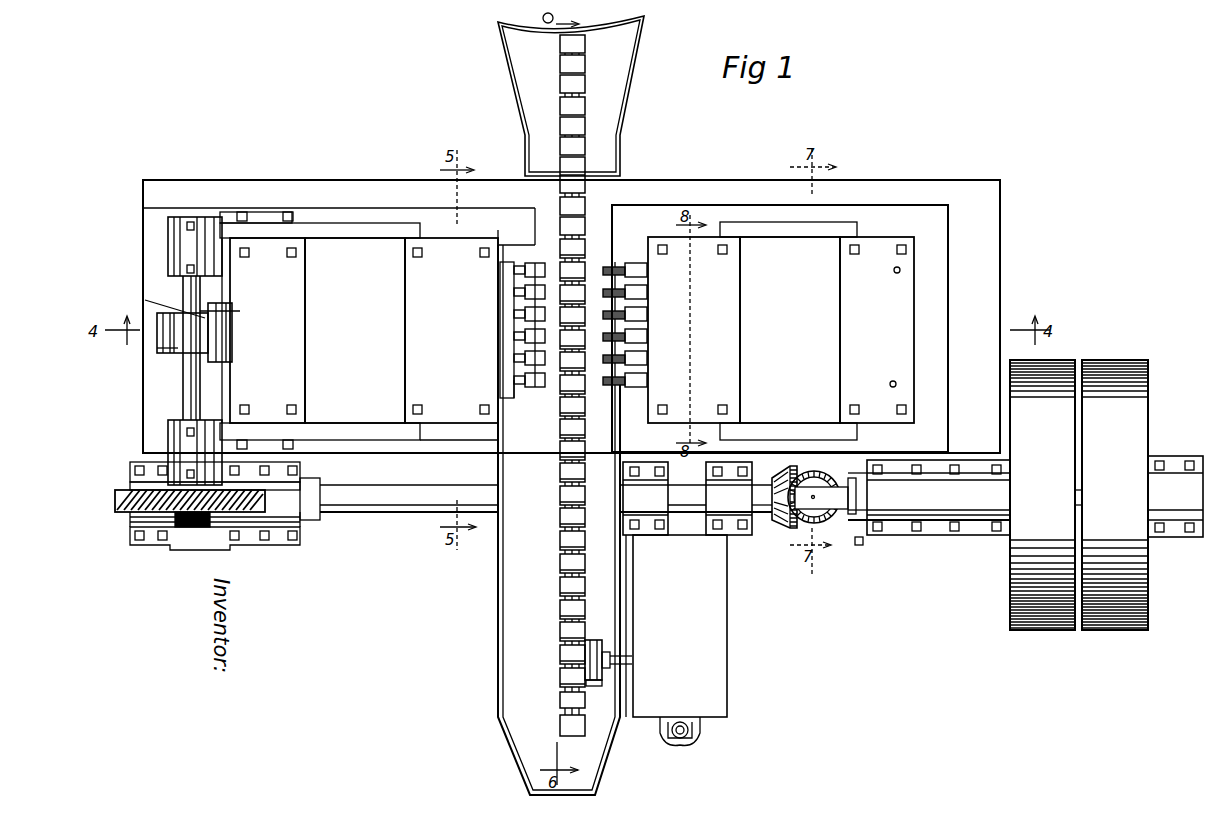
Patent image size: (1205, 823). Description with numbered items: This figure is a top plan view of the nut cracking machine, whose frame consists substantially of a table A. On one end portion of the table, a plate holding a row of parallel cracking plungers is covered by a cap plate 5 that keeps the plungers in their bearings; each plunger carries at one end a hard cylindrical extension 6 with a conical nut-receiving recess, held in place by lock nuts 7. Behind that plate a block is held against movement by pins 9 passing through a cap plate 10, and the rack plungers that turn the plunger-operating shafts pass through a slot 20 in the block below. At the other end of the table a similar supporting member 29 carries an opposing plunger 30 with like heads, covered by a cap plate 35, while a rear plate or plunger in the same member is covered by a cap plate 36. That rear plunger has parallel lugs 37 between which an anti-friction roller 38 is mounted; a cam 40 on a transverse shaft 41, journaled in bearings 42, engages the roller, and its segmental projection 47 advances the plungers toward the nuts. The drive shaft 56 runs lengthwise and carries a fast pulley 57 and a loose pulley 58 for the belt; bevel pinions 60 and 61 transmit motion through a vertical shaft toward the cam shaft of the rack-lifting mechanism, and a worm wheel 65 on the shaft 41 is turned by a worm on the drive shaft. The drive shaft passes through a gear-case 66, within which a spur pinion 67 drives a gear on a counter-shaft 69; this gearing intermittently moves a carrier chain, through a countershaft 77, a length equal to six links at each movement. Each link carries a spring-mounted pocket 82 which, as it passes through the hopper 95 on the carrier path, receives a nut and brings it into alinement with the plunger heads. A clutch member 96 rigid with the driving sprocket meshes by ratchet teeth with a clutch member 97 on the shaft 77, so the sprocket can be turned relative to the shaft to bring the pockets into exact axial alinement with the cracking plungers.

The table A is at (692, 181).
The hopper 95 is at (636, 106).
The pocket 82 is at (562, 521).
The cap plate 36 is at (320, 330).
The cap plate 35 is at (451, 339).
The plunger 30 is at (496, 314).
The supporting member 29 is at (433, 447).
The bearing 42 is at (193, 226).
The shaft 41 is at (190, 398).
The anti-friction roller 38 is at (232, 332).
The lug 37 is at (226, 306).
The cam 40 is at (165, 352).
The segmental projection 47 is at (205, 318).
The worm wheel 65 is at (128, 498).
The cylindrical extension 6 is at (530, 264).
The lock nut 7 is at (516, 397).
The spur pinion 67 is at (630, 262).
The slot 20 is at (940, 283).
The cap plate 5 is at (752, 331).
The cap plate 10 is at (877, 330).
The pin 9 is at (896, 273).
The bevel pinion 60 is at (782, 462).
The bevel pinion 61 is at (815, 468).
The drive shaft 56 is at (836, 500).
The fast pulley 57 is at (1042, 495).
The loose pulley 58 is at (1139, 495).
The gear-case 66 is at (627, 635).
The counter-shaft 69 is at (733, 693).
The clutch member 96 is at (590, 640).
The countershaft 77 is at (632, 662).
The clutch member 97 is at (599, 693).